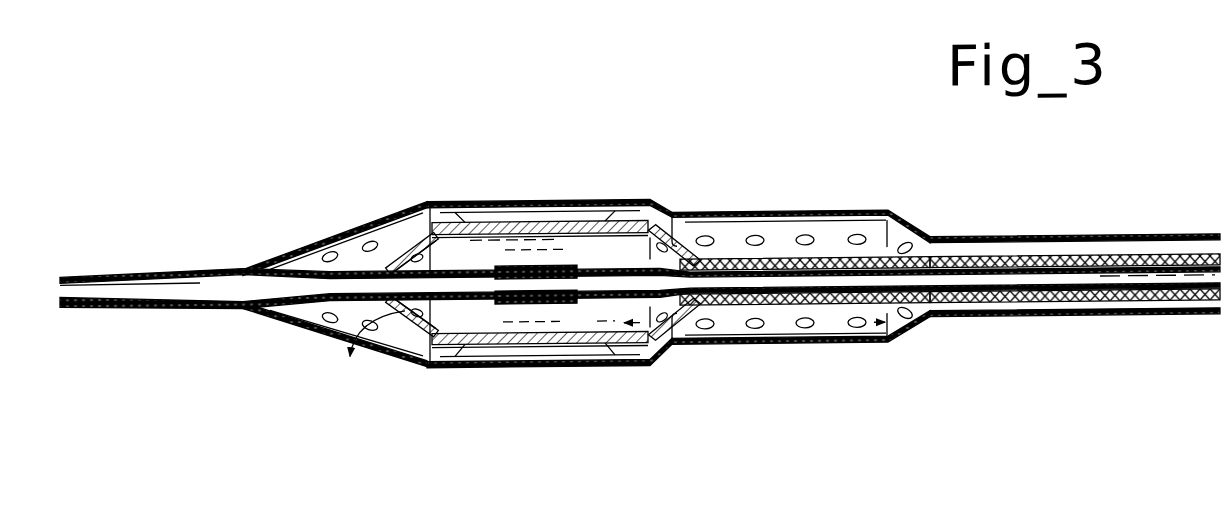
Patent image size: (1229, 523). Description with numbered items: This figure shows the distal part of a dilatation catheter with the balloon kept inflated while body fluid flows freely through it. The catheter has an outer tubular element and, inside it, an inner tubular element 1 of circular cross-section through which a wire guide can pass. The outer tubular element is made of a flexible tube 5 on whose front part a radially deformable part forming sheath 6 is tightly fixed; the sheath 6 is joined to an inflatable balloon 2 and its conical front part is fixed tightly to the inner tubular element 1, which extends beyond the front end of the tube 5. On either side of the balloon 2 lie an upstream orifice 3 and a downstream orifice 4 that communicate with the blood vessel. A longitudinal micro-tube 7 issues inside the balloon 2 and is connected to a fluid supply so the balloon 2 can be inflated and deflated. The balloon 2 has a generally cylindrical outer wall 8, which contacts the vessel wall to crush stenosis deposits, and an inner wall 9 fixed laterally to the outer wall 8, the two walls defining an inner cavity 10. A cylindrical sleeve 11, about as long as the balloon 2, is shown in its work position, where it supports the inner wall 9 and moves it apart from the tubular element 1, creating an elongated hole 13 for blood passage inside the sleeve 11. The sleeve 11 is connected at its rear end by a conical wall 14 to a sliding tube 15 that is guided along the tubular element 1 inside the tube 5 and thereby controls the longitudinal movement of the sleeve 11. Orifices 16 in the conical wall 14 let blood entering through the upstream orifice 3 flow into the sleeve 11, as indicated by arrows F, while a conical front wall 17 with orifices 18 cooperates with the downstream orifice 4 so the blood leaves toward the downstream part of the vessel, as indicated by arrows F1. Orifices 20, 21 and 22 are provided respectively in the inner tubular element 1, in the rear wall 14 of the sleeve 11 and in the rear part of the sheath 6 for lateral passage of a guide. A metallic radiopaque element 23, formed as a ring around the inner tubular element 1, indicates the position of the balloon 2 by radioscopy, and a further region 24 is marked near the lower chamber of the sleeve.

The inner tubular element 1 is at (840, 308).
The inflatable balloon 2 is at (520, 189).
The upstream orifice 3 is at (906, 235).
The downstream orifice 4 is at (363, 222).
The flexible tube 5 is at (1000, 243).
The part forming sheath 6 is at (592, 153).
The micro-tube 7 is at (1122, 254).
The outer wall 8 is at (549, 204).
The inner wall 9 is at (440, 203).
The inner cavity 10 is at (483, 239).
The sleeve 11 is at (530, 348).
The elongated hole 13 is at (573, 254).
The conical wall 14 is at (678, 253).
The sliding tube 15 is at (1180, 261).
The orifices 16 is at (683, 263).
The conical front wall 17 is at (402, 252).
The orifices 18 is at (389, 351).
The orifice 20 is at (261, 309).
The orifice 21 is at (340, 332).
The orifice 22 is at (677, 360).
The metallic radiopaque element 23 is at (917, 332).
The lower chamber 24 is at (575, 324).
The arrows F is at (903, 340).
The arrows F1 is at (427, 322).